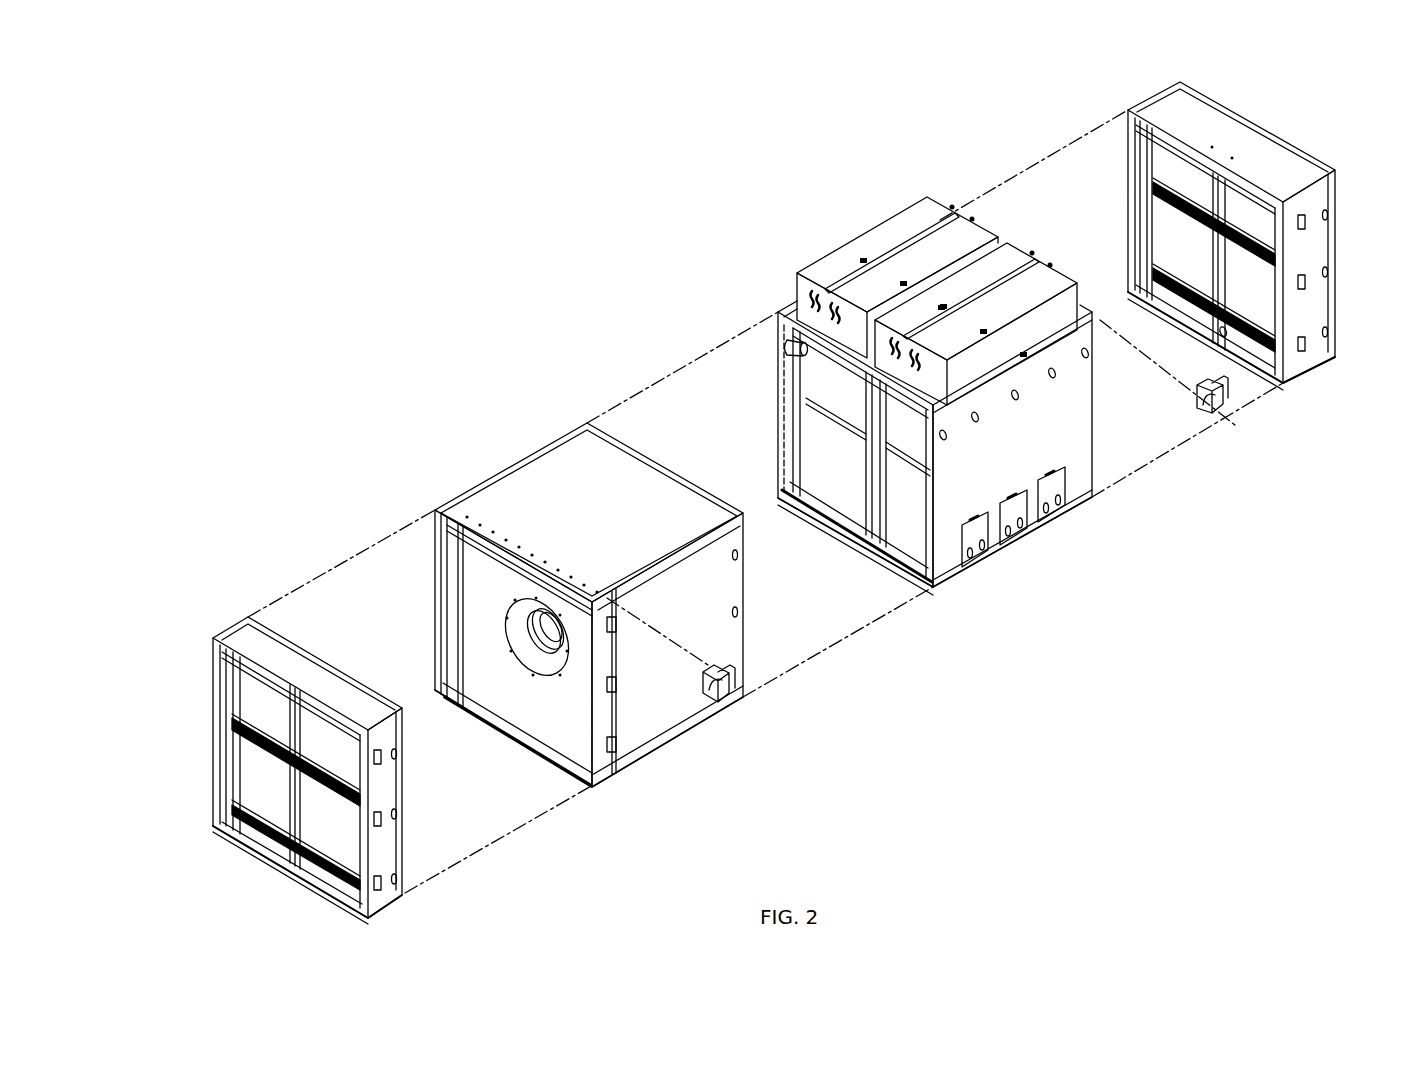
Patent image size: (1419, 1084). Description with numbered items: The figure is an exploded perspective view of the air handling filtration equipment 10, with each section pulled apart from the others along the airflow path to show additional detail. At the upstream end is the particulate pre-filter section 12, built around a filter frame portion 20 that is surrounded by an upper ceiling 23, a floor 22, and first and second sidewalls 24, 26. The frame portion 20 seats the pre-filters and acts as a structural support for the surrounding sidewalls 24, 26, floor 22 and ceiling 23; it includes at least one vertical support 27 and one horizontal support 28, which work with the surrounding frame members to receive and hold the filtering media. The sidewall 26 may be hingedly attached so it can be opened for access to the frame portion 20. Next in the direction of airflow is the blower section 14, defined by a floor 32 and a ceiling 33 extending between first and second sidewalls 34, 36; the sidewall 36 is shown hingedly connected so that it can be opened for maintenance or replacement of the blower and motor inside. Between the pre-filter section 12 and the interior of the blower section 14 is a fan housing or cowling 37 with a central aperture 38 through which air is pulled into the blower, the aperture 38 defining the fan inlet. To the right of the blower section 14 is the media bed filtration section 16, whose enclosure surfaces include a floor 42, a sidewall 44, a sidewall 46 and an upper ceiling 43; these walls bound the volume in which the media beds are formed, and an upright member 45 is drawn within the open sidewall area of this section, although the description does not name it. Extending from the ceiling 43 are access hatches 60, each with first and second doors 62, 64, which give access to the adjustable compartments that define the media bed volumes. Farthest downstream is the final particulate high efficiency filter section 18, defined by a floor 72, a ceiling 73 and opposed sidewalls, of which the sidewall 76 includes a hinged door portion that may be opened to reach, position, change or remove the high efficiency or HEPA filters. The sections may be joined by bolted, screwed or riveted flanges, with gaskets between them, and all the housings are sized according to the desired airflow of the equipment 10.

The air handling filtration equipment 10 is at (355, 180).
The particulate pre-filter section 12 is at (301, 746).
The blower section 14 is at (557, 610).
The media bed filtration section 16 is at (967, 369).
The final particulate high efficiency filter section 18 is at (1213, 271).
The filter frame portion 20 is at (325, 735).
The floor 22 is at (335, 888).
The upper ceiling 23 is at (365, 700).
The first sidewall 24 is at (233, 700).
The second sidewall 26 is at (388, 777).
The vertical support 27 is at (262, 835).
The horizontal support 28 is at (260, 730).
The floor 32 is at (575, 770).
The ceiling 33 is at (597, 541).
The first sidewall 34 is at (425, 543).
The second sidewall 36 is at (660, 720).
The fan housing 37 is at (557, 677).
The central aperture 38 is at (548, 673).
The floor 42 is at (905, 552).
The upper ceiling 43 is at (790, 305).
The sidewall 44 is at (899, 419).
The center post 45 is at (870, 468).
The sidewall 46 is at (1029, 444).
The access hatch 60 is at (949, 274).
The first door 62 is at (885, 230).
The second door 64 is at (923, 255).
The floor 72 is at (1265, 365).
The ceiling 73 is at (1265, 125).
The sidewall 76 is at (1335, 305).